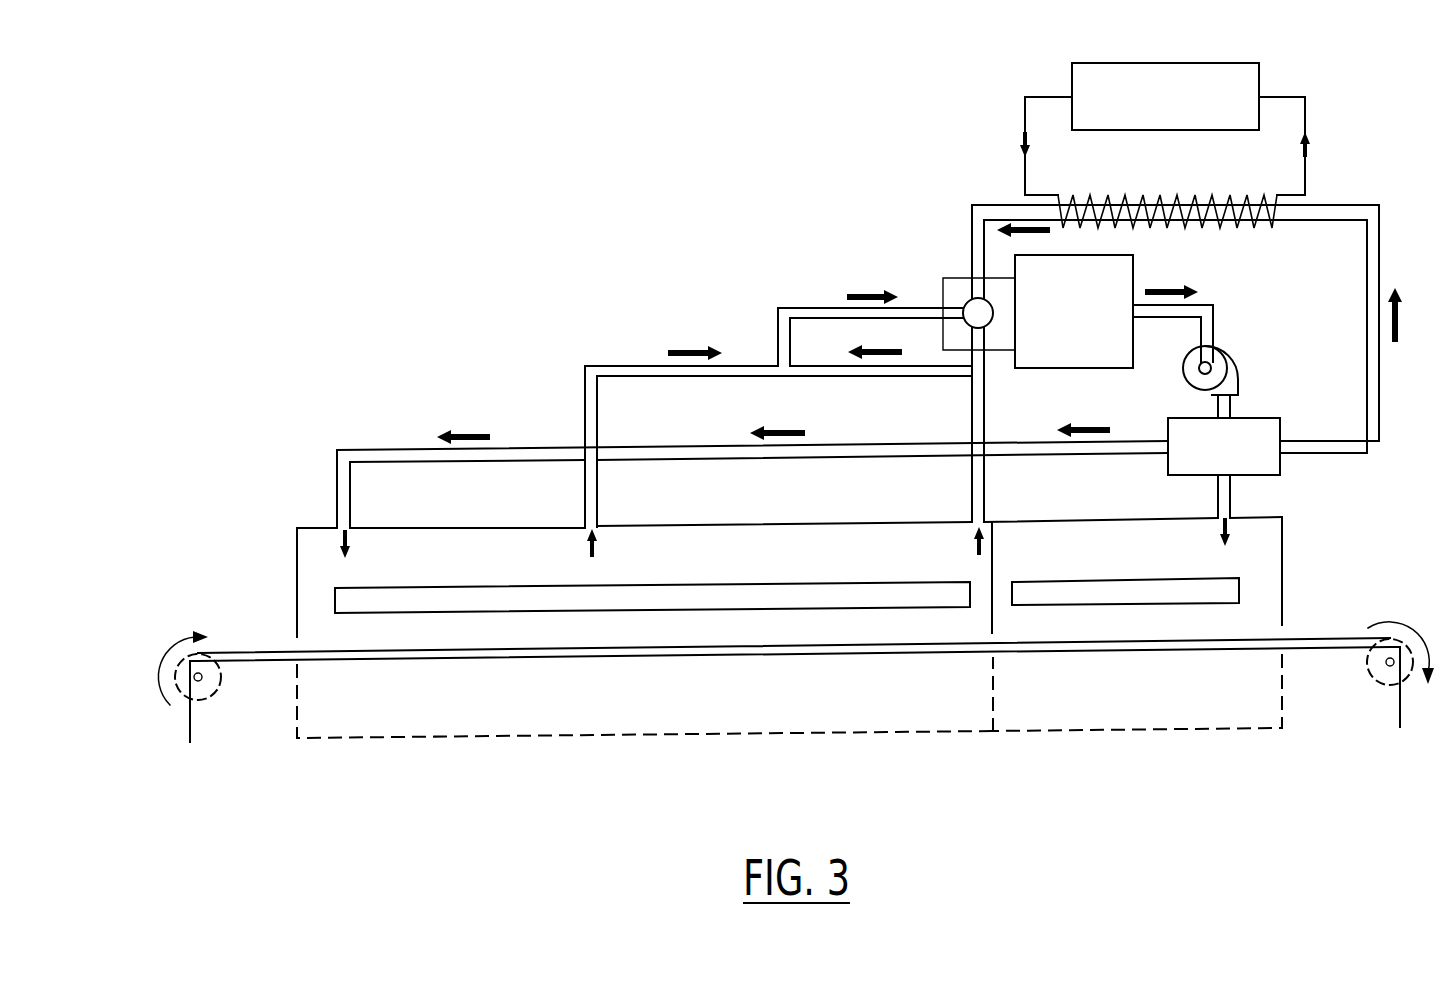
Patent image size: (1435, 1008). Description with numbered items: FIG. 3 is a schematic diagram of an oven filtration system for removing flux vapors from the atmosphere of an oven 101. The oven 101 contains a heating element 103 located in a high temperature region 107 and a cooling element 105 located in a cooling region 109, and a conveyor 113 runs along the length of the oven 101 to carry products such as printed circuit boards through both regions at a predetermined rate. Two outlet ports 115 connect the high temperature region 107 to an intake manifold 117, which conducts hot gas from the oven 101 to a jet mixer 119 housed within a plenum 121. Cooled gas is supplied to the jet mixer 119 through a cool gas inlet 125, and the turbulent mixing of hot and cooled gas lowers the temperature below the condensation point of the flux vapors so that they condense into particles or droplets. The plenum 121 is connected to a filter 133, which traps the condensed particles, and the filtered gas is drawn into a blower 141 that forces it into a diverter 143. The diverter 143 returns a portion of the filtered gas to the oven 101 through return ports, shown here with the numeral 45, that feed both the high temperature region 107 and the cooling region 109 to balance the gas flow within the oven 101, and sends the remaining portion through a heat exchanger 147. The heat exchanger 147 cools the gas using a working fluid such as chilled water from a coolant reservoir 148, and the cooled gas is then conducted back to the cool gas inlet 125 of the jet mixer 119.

The oven 101 is at (282, 510).
The air supply duct with outlets 45 is at (337, 527).
The heating element 103 is at (462, 597).
The cooling element 105 is at (1097, 585).
The high temperature region 107 is at (683, 622).
The cooling region 109 is at (1075, 622).
The conveyor 113 is at (270, 652).
The outlet ports 115 is at (585, 527).
The intake manifold 117 is at (810, 308).
The jet mixer 119 is at (985, 322).
The plenum 121 is at (943, 280).
The cool gas inlet 125 is at (972, 232).
The filter 133 is at (1114, 311).
The blower 141 is at (1228, 370).
The diverter 143 is at (1224, 467).
The heat exchanger 147 is at (1250, 226).
The coolant reservoir 148 is at (1165, 129).